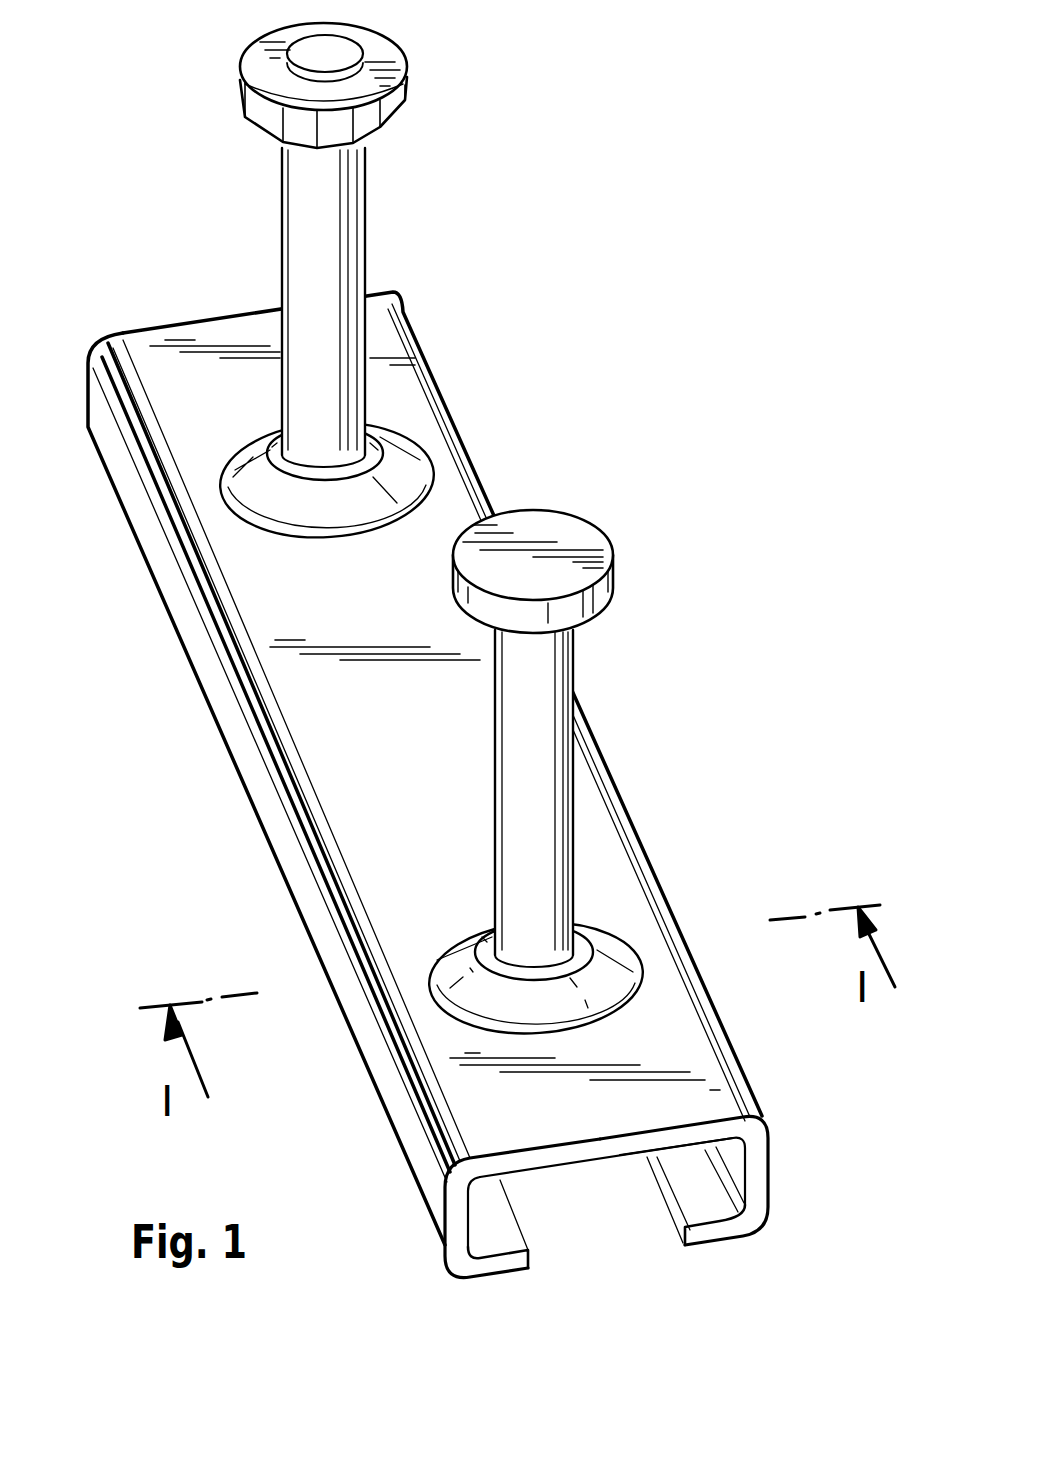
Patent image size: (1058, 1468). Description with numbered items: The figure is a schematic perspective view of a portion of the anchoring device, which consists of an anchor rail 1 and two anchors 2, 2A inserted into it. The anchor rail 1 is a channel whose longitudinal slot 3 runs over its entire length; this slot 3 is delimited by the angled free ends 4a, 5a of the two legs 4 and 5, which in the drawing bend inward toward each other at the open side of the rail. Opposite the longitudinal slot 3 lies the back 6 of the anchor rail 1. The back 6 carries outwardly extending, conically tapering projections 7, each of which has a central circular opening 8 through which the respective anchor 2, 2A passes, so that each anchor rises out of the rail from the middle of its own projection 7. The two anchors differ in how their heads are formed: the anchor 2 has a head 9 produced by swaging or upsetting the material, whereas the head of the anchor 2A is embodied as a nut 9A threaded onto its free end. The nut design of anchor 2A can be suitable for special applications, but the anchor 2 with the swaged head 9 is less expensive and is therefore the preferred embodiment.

The anchor rail 1 is at (753, 1098).
The anchor 2 is at (560, 670).
The anchor 2A is at (345, 220).
The longitudinal slot 3 is at (607, 1213).
The leg 4 is at (458, 1213).
The angled free end 4a is at (516, 1232).
The leg 5 is at (757, 1175).
The angled free end 5a is at (693, 1212).
The back 6 is at (655, 1050).
The conically tapering projection 7 is at (400, 467).
The central circular opening 8 is at (373, 437).
The swaged head 9 is at (577, 530).
The nut 9A is at (388, 62).